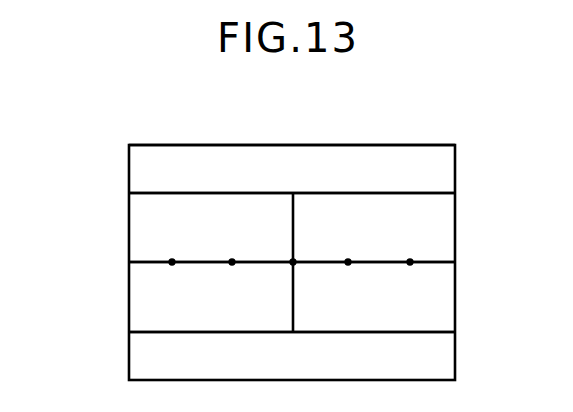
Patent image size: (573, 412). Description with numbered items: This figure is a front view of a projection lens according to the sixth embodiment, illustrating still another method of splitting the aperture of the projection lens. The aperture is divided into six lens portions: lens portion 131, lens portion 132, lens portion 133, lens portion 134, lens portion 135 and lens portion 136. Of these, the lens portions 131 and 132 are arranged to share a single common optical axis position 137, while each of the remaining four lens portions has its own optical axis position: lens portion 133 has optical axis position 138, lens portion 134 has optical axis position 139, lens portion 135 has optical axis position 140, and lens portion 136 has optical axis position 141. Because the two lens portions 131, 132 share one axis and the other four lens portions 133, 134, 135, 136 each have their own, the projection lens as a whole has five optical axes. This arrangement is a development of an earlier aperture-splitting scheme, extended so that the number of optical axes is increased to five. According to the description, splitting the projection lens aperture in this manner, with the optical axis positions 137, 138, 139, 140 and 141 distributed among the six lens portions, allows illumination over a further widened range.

The lens portion 131 is at (447, 172).
The lens portion 132 is at (448, 356).
The lens portion 133 is at (137, 301).
The lens portion 134 is at (448, 296).
The lens portion 135 is at (137, 230).
The lens portion 136 is at (448, 224).
The common optical axis position 137 is at (293, 262).
The optical axis position 138 is at (232, 262).
The optical axis position 139 is at (348, 262).
The optical axis position 140 is at (172, 262).
The optical axis position 141 is at (410, 262).